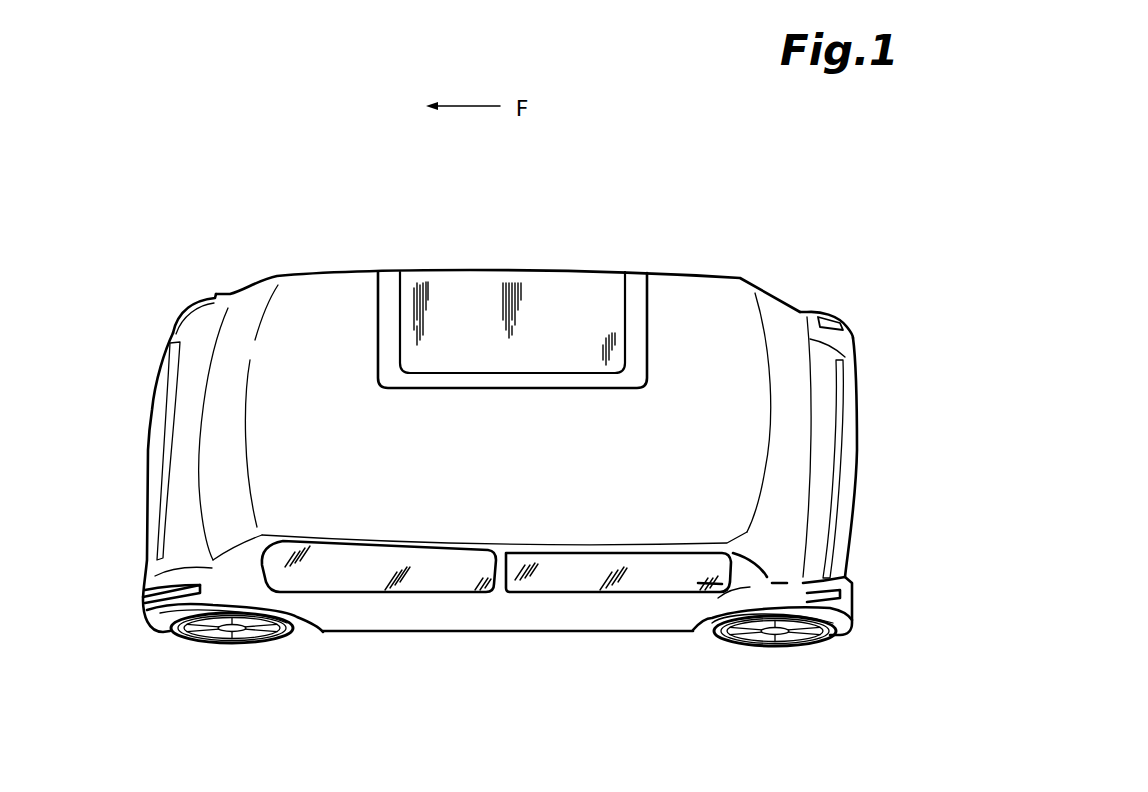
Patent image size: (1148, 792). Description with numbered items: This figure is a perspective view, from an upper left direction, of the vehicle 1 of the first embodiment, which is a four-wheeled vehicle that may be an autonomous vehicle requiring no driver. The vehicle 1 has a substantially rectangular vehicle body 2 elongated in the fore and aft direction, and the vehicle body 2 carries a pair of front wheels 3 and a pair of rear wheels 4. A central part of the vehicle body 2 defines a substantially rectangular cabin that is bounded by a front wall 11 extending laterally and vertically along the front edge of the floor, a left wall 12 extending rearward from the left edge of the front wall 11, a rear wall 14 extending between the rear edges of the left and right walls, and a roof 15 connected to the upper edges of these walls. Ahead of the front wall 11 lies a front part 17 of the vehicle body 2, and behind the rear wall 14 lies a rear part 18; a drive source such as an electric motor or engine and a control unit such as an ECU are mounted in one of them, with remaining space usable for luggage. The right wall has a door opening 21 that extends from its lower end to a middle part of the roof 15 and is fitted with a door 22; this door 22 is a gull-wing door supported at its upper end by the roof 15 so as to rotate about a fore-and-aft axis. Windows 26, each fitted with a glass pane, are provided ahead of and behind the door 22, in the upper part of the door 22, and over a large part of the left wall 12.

The vehicle 1 is at (691, 186).
The vehicle body 2 is at (727, 268).
The front wheels 3 is at (190, 627).
The rear wheels 4 is at (812, 630).
The front wall 11 is at (223, 400).
The left wall 12 is at (530, 605).
The rear wall 14 is at (795, 445).
The roof 15 is at (323, 320).
The front part 17 is at (173, 452).
The rear part 18 is at (827, 505).
The door opening 21 is at (378, 288).
The door 22 is at (635, 283).
The windows 26 is at (548, 284).